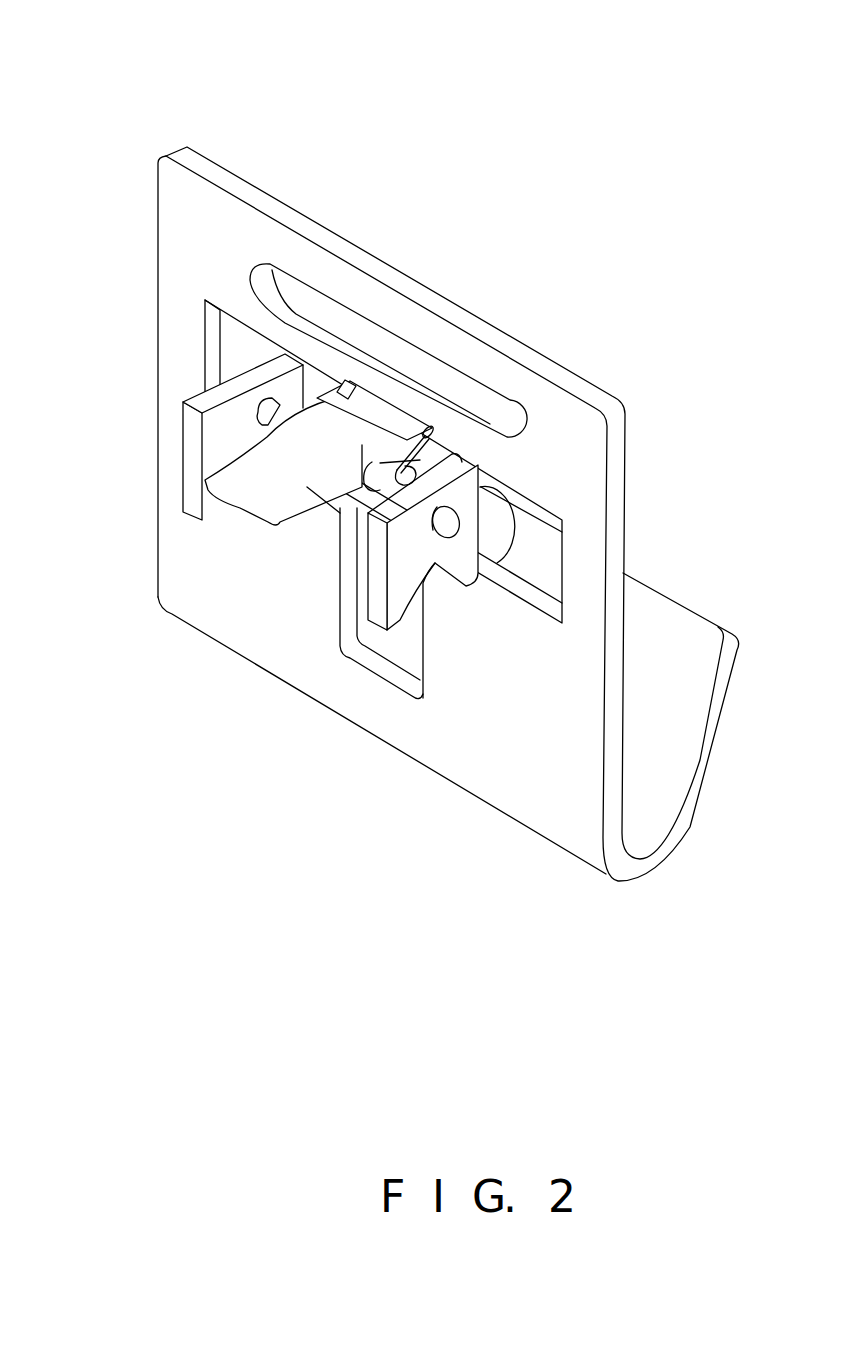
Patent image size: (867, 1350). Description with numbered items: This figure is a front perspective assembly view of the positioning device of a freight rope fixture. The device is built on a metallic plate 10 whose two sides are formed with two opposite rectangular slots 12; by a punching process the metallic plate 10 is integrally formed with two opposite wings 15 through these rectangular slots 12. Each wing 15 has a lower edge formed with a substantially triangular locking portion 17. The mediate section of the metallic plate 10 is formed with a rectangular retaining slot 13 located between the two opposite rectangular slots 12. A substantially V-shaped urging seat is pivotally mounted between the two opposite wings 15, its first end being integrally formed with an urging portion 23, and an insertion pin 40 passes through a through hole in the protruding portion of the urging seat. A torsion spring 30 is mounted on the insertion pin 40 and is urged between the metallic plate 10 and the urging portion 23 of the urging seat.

The metallic plate 10 is at (264, 95).
The rectangular slots 12 is at (448, 514).
The rectangular retaining slot 13 is at (375, 637).
The wings 15 is at (223, 440).
The locking portion 17 is at (422, 634).
The urging portion 23 is at (502, 537).
The torsion spring 30 is at (432, 432).
The insertion pin 40 is at (277, 413).